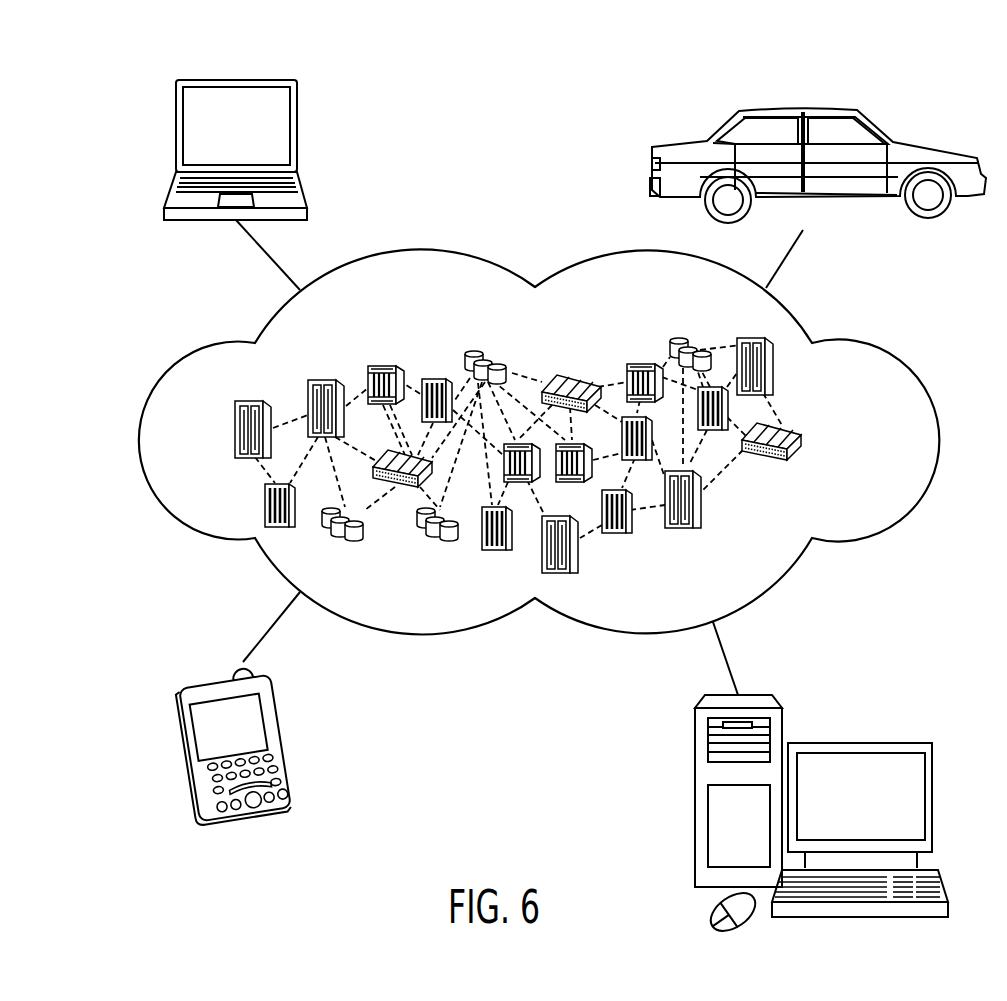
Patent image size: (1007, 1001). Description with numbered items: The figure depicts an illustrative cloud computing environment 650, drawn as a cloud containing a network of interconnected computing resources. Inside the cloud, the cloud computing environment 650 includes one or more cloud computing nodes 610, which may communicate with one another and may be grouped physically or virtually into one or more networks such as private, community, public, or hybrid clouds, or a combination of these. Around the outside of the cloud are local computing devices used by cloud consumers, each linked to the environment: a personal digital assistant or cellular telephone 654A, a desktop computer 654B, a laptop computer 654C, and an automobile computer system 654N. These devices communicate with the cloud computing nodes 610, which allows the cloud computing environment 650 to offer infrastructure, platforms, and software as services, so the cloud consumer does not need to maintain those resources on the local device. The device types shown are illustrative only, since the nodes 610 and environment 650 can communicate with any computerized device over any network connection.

The cloud computing environment 650 is at (875, 347).
The cloud computing node 610 is at (818, 441).
The personal digital assistant or cellular telephone 654A is at (215, 680).
The desktop computer 654B is at (860, 742).
The laptop computer 654C is at (236, 80).
The automobile computer system 654N is at (793, 110).